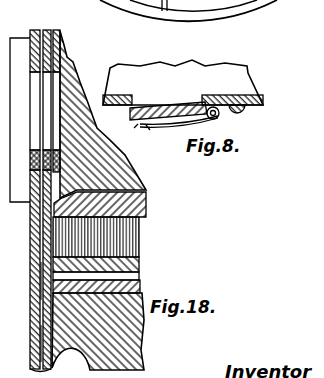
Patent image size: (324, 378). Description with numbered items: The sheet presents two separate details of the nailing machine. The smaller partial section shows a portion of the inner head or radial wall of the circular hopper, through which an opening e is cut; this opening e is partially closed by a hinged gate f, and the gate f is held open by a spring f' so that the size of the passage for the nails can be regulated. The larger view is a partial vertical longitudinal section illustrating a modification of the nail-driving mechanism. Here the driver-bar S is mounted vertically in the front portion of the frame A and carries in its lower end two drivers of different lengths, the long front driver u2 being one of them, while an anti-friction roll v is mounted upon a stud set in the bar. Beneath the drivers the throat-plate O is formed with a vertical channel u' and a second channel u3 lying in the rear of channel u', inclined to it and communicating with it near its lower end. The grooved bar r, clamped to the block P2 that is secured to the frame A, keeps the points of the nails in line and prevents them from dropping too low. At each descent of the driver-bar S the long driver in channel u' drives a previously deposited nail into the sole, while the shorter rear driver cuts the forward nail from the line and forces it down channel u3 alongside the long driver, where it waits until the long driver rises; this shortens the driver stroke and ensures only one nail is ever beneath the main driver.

In FIG. 18, the driver-bar S is at (23, 105).
In FIG. 18, the driver u2 is at (41, 118).
In FIG. 18, the throat-plate O is at (32, 271).
In FIG. 18, the second channel u3 is at (50, 267).
In FIG. 18, the vertical channel u' is at (26, 336).
In FIG. 18, the frame A is at (104, 200).
In FIG. 18, the anti-friction roll v is at (104, 204).
In FIG. 18, the grooved bar r is at (133, 264).
In FIG. 18, the block P2 is at (133, 286).
In FIG. 8, the opening e is at (232, 12).
In FIG. 8, the hinged gate f is at (174, 121).
In FIG. 8, the spring f' is at (225, 121).